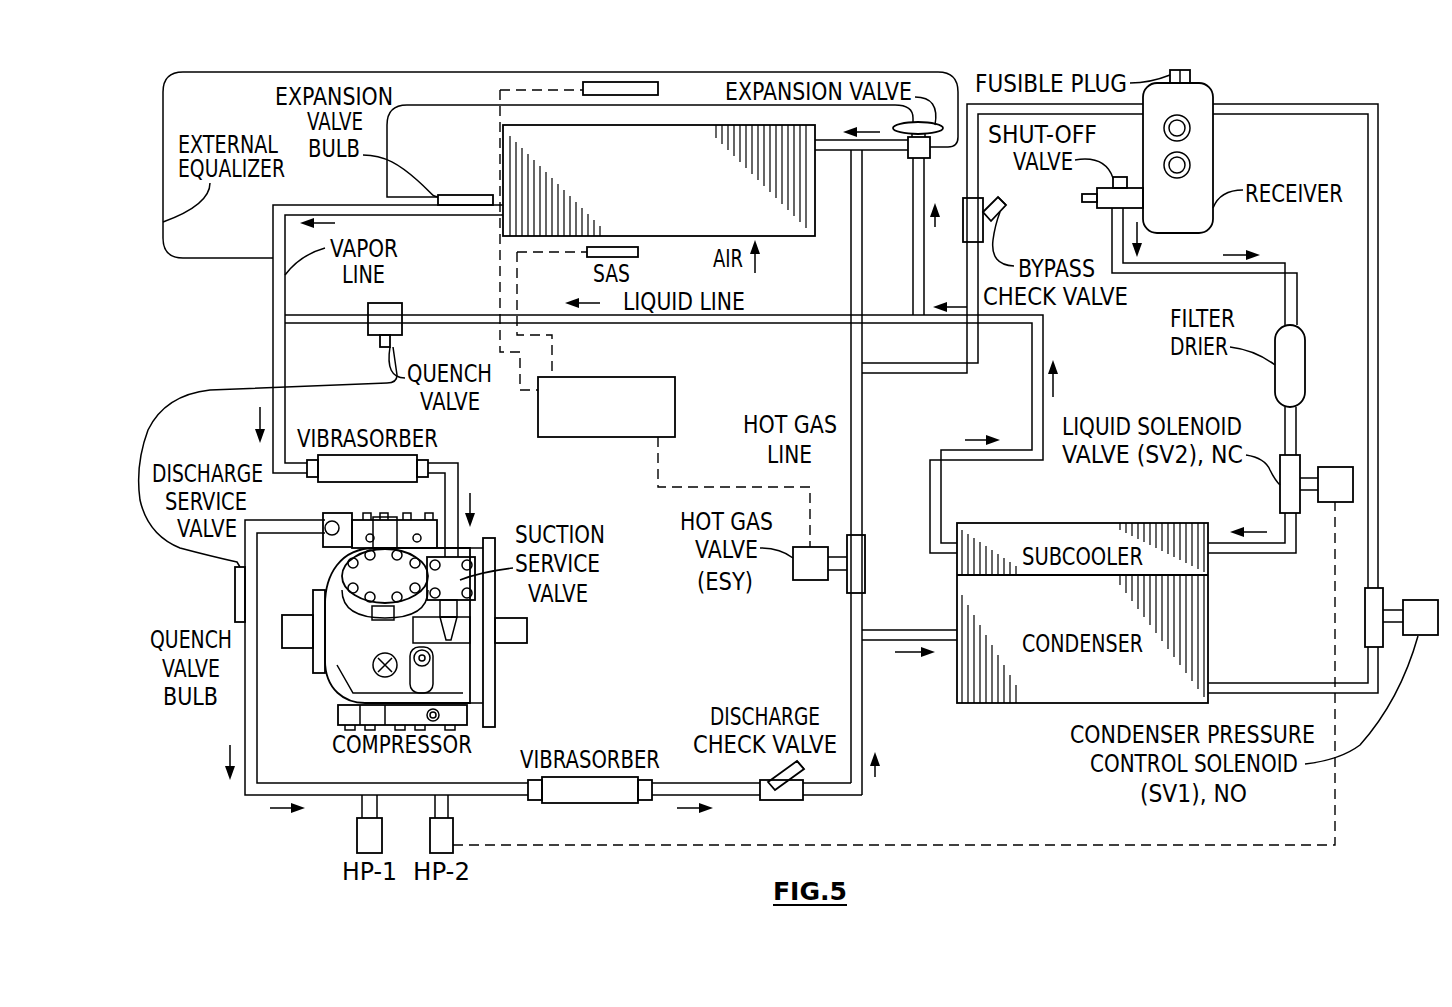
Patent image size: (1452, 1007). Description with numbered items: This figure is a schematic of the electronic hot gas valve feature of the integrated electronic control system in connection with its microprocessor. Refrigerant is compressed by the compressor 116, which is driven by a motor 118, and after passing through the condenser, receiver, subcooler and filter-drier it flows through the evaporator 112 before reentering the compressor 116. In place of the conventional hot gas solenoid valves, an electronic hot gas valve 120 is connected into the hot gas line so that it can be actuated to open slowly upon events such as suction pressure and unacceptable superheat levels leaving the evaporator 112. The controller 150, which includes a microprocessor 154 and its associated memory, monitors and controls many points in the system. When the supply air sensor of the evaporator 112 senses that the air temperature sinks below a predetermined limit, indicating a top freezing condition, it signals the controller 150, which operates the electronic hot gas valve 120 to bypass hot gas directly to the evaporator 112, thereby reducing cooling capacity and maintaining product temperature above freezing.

The evaporator 112 is at (503, 160).
The compressor 116 is at (439, 621).
The motor 118 is at (465, 702).
The electronic hot gas valve 120 is at (813, 582).
The controller 150 is at (647, 388).
The microprocessor 154 is at (645, 377).